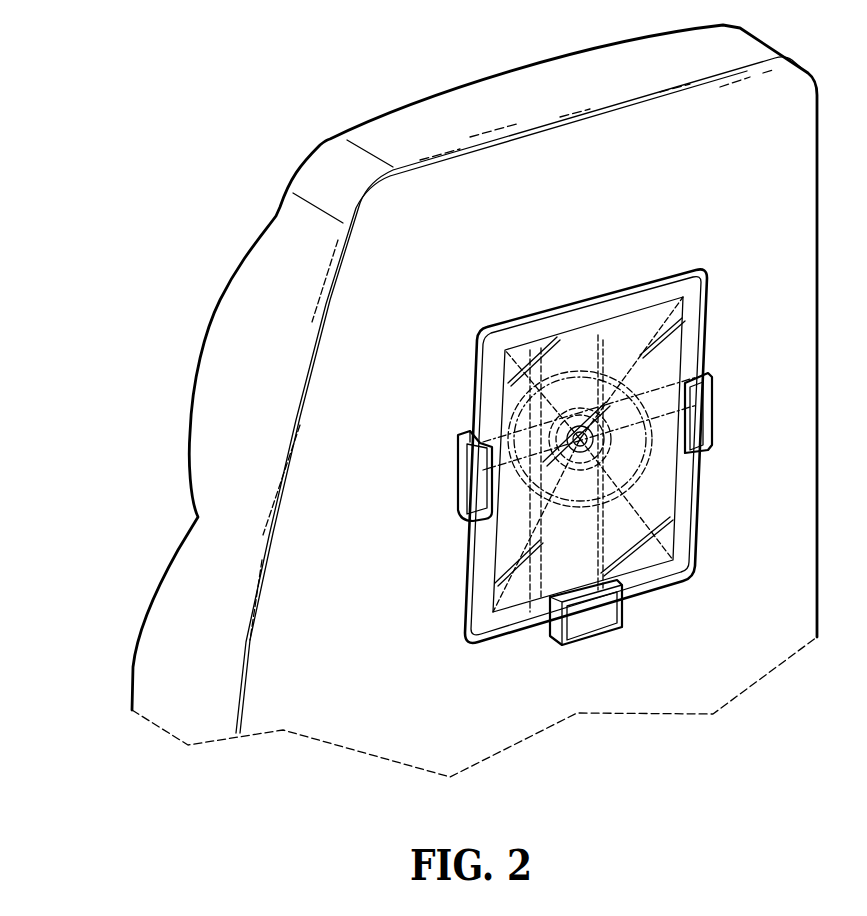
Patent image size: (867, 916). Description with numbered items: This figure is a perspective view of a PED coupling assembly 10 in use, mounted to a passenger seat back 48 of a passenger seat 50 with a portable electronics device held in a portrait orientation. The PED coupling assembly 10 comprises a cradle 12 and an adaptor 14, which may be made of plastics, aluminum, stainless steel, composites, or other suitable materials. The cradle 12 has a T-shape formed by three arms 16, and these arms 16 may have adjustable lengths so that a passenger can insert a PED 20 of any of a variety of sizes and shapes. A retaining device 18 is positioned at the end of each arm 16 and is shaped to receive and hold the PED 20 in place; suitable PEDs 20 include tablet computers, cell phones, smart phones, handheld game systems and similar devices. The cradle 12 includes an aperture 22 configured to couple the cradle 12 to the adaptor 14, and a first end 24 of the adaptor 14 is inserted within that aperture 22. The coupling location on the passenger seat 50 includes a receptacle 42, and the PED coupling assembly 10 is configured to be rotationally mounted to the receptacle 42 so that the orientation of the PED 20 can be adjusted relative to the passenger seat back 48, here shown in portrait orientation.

The PED coupling assembly 10 is at (737, 393).
The cradle 12 is at (577, 645).
The adaptor 14 is at (606, 385).
The arm 16 is at (460, 473).
The retaining device 18 is at (459, 510).
The PED 20 is at (704, 295).
The aperture 22 is at (566, 432).
The first end 24 is at (592, 414).
The receptacle 42 is at (640, 372).
The passenger seat back 48 is at (442, 220).
The passenger seat 50 is at (207, 550).